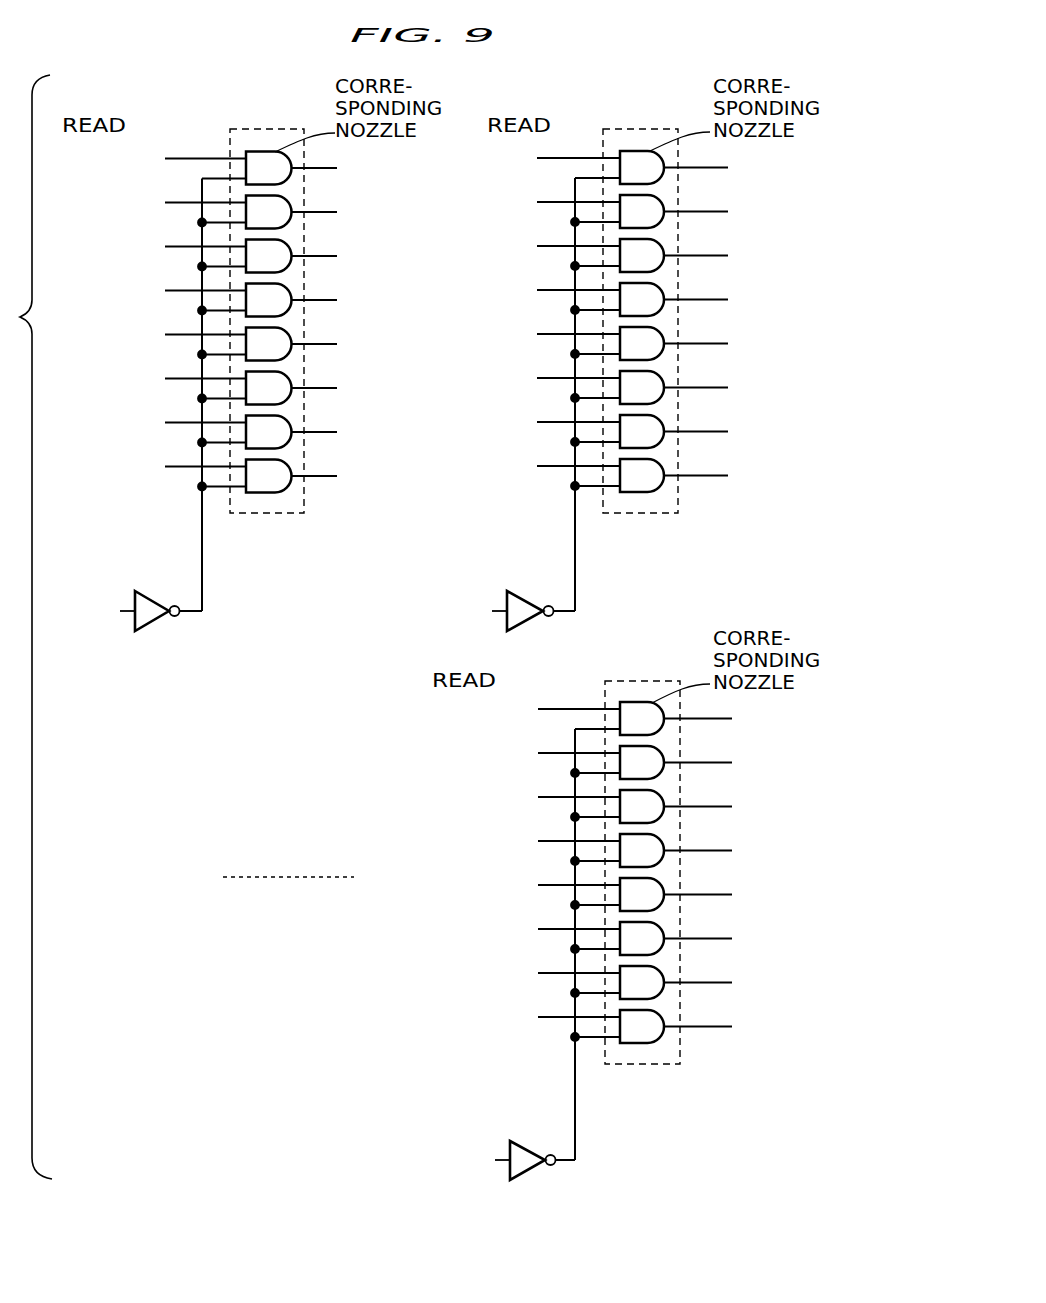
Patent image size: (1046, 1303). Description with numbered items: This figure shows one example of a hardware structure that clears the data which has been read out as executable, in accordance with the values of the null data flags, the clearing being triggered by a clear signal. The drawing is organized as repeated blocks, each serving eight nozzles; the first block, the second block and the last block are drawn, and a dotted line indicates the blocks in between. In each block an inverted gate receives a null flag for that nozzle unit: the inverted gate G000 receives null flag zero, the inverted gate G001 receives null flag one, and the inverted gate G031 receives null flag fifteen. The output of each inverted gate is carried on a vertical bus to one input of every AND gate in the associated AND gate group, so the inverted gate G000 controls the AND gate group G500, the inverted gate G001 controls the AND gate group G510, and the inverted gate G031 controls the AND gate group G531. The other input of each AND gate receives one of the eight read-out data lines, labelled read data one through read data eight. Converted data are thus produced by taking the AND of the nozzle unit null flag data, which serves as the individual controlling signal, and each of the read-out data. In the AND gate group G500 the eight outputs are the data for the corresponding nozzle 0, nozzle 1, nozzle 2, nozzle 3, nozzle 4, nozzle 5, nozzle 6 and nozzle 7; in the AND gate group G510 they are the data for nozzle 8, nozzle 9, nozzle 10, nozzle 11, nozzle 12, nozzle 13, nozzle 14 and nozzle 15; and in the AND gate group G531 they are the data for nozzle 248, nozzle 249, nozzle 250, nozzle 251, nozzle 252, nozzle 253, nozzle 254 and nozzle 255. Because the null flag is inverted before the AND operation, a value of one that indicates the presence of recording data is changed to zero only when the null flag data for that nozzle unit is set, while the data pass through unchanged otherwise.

The AND gate group G500 is at (292, 113).
The AND gate group G510 is at (665, 112).
The AND gate group G531 is at (667, 663).
The inverted gate G000 is at (153, 594).
The inverted gate G001 is at (526, 594).
The inverted gate G031 is at (528, 1143).
The AND gate output for nozzle 0 is at (249, 165).
The AND gate output for nozzle 1 is at (249, 209).
The AND gate output for nozzle 2 is at (249, 253).
The AND gate output for nozzle 3 is at (249, 297).
The AND gate output for nozzle 4 is at (249, 341).
The AND gate output for nozzle 5 is at (249, 385).
The AND gate output for nozzle 6 is at (249, 429).
The AND gate output for nozzle 7 is at (249, 473).
The AND gate output for nozzle 8 is at (632, 164).
The AND gate output for nozzle 9 is at (632, 208).
The AND gate output for nozzle 10 is at (632, 252).
The AND gate output for nozzle 11 is at (632, 296).
The AND gate output for nozzle 12 is at (632, 340).
The AND gate output for nozzle 13 is at (632, 384).
The AND gate output for nozzle 14 is at (632, 428).
The AND gate output for nozzle 15 is at (632, 472).
The AND gate output for nozzle 248 is at (634, 715).
The AND gate output for nozzle 249 is at (634, 759).
The AND gate output for nozzle 250 is at (634, 803).
The AND gate output for nozzle 251 is at (634, 847).
The AND gate output for nozzle 252 is at (634, 891).
The AND gate output for nozzle 253 is at (634, 935).
The AND gate output for nozzle 254 is at (634, 979).
The AND gate output for nozzle 255 is at (634, 1023).